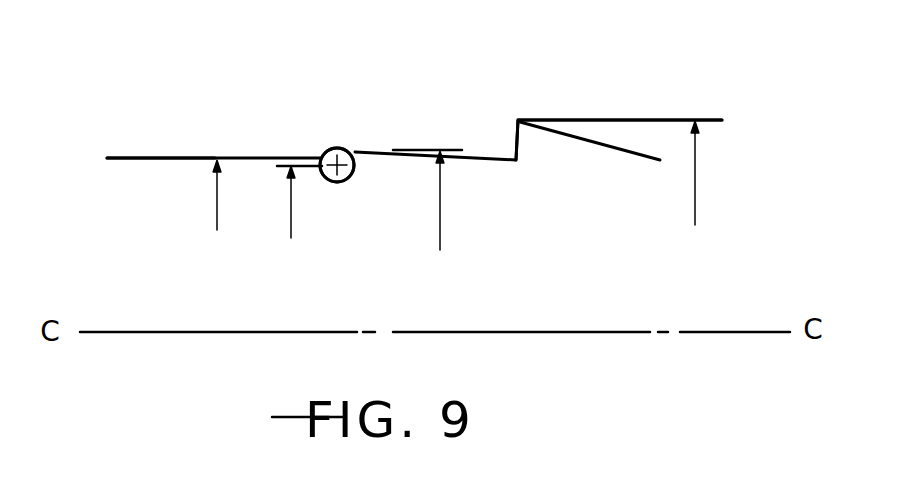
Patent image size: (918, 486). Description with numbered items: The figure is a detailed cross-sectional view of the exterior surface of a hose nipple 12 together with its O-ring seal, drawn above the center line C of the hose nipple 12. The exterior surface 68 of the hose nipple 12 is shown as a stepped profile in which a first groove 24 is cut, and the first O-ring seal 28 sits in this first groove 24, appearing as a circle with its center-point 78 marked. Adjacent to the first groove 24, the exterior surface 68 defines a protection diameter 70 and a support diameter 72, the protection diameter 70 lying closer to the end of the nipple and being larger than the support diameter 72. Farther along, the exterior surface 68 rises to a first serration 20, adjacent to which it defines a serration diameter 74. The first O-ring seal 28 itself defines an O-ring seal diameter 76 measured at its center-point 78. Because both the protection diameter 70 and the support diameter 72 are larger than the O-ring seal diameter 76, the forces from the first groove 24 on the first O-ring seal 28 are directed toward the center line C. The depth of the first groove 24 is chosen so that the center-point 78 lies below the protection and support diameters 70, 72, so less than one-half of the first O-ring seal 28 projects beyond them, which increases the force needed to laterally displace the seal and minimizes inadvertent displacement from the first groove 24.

The hose nipple 12 is at (168, 157).
The exterior surface 68 is at (123, 157).
The first O-ring seal 28 is at (326, 151).
The center-point 78 is at (345, 150).
The first groove 24 is at (333, 183).
The first serration 20 is at (518, 120).
The support diameter 72 is at (222, 214).
The O-ring seal diameter 76 is at (299, 219).
The protection diameter 70 is at (427, 220).
The serration diameter 74 is at (697, 194).